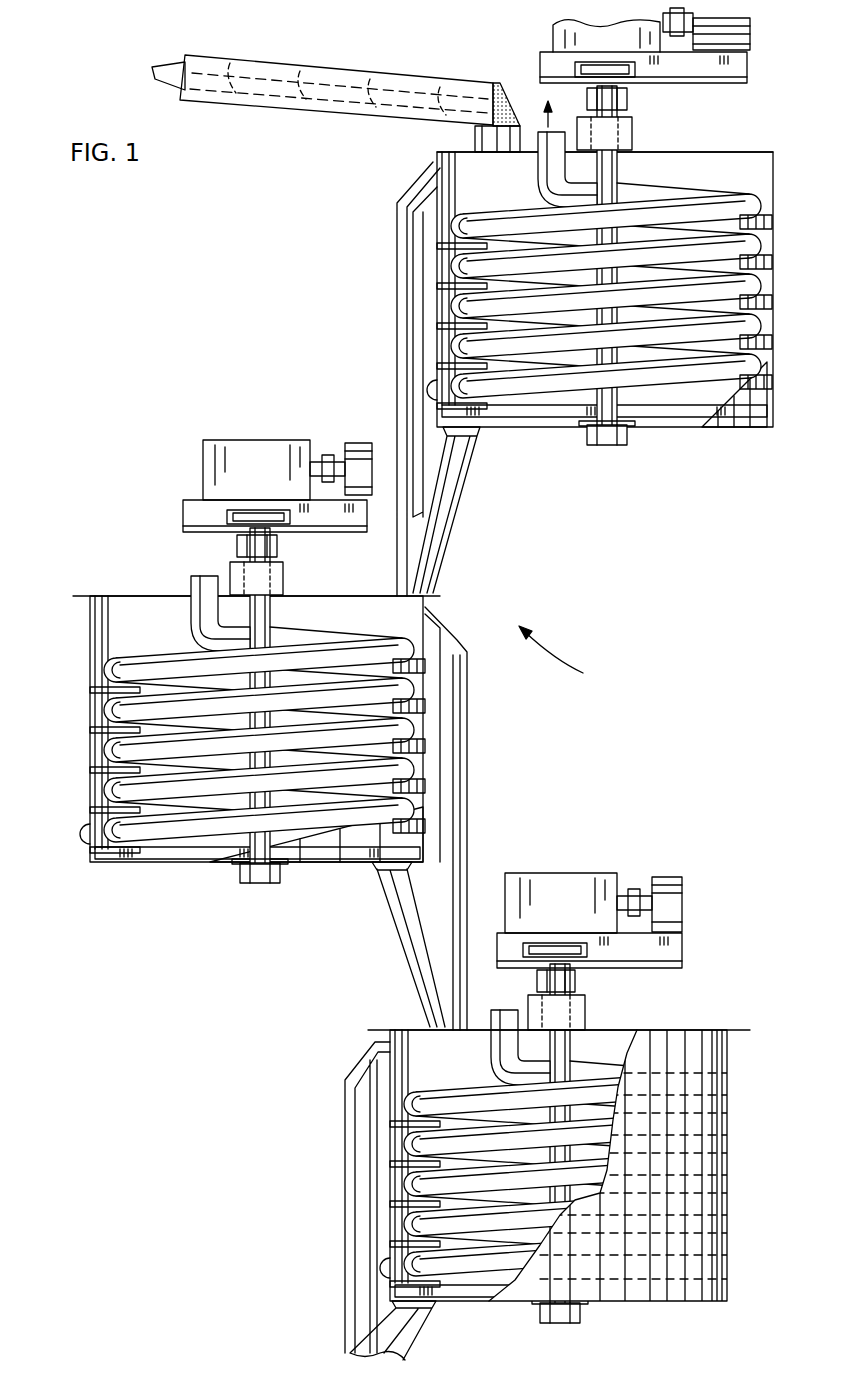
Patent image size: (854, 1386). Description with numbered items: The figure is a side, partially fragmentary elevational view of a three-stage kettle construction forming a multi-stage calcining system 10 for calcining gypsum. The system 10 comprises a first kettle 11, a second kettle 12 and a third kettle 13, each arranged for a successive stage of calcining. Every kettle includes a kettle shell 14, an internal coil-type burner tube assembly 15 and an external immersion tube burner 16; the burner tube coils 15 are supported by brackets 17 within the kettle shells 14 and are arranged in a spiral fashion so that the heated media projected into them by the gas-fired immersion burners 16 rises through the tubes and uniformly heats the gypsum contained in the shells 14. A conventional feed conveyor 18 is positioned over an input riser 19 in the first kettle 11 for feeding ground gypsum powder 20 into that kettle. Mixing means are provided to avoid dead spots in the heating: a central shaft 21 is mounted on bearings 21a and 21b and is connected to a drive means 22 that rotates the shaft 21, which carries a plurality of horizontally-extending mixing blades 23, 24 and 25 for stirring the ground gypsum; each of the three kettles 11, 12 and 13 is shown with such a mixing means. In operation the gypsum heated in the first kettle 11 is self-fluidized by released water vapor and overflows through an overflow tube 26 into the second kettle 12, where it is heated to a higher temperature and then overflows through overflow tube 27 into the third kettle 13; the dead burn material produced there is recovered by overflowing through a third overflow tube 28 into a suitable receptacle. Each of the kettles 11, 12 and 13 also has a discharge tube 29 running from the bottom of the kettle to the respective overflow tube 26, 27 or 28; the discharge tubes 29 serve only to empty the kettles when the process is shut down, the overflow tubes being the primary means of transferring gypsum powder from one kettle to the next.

The multi-stage calcining system 10 is at (561, 654).
The first kettle 11 is at (733, 158).
The second kettle 12 is at (127, 596).
The third kettle 13 is at (707, 1052).
The kettle shell 14 is at (445, 165).
The internal coil-type burner tube assembly 15 is at (732, 288).
The external immersion tube burner 16 is at (430, 390).
The brackets 17 is at (772, 343).
The feed conveyor 18 is at (272, 62).
The input riser 19 is at (475, 137).
The ground gypsum powder 20 is at (495, 88).
The central shaft 21 is at (615, 170).
The bearing 21a is at (633, 133).
The bearing 21b is at (614, 442).
The drive means 22 is at (555, 33).
The mixing blade 23 is at (458, 243).
The mixing blade 24 is at (500, 330).
The mixing blade 25 is at (680, 420).
The overflow tube 26 is at (397, 260).
The overflow tube 27 is at (470, 684).
The third overflow tube 28 is at (370, 1060).
The discharge tube 29 is at (455, 495).